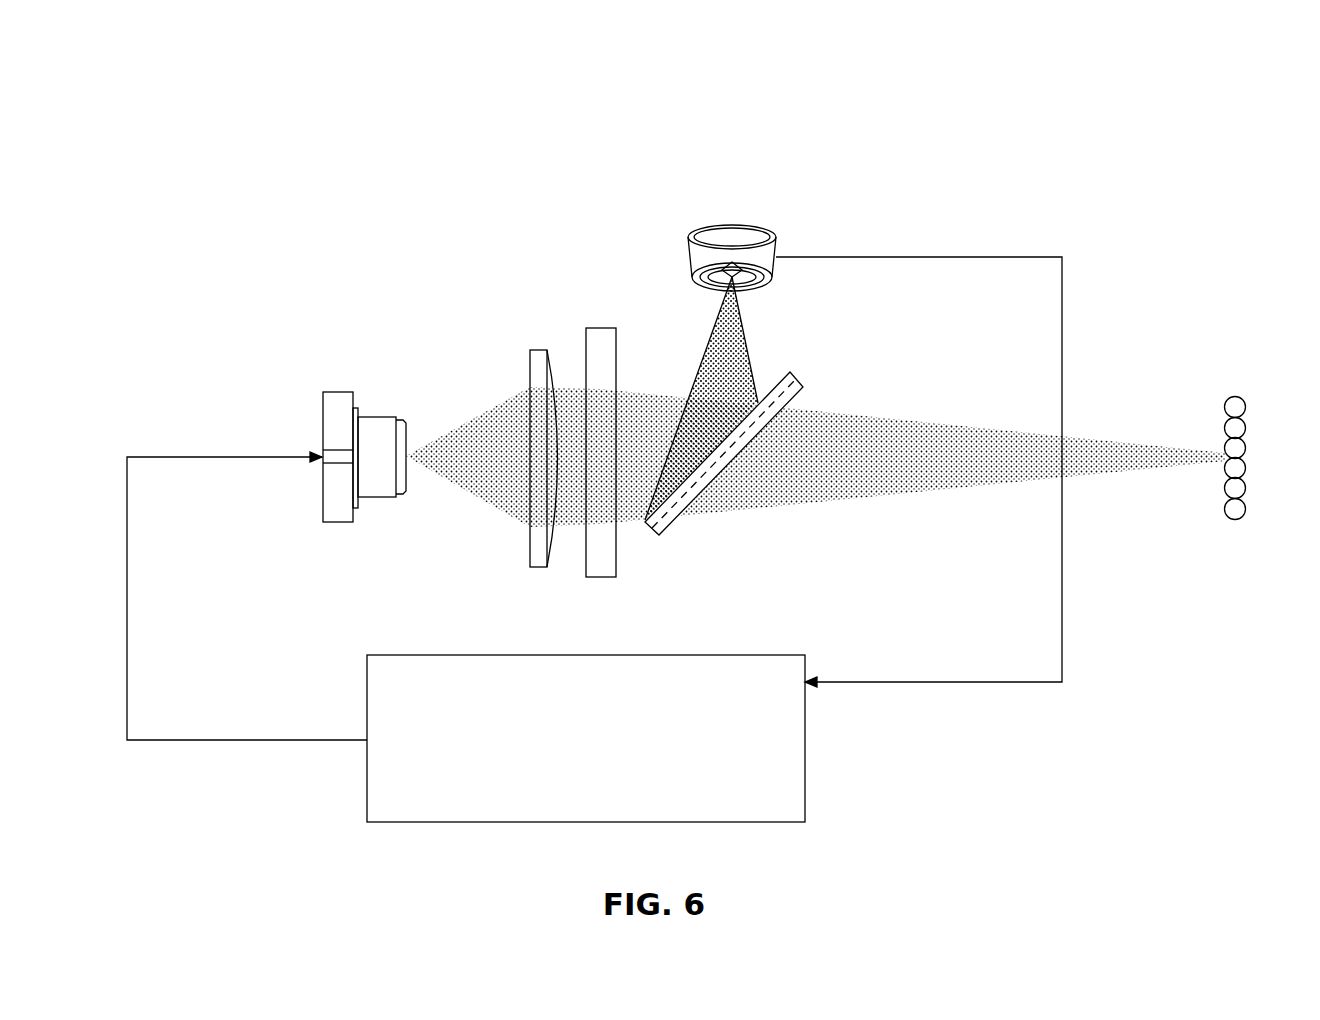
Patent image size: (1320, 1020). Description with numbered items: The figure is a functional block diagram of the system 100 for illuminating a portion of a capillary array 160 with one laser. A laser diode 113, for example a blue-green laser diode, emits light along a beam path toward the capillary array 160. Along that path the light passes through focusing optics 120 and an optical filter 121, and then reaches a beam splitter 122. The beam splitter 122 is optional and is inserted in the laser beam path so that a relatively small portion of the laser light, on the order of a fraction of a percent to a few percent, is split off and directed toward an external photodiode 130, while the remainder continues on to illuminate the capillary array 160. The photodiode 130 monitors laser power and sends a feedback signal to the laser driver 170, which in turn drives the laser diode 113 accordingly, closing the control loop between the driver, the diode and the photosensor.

The system 100 is at (978, 68).
The laser diode 113 is at (380, 422).
The focusing optics 120 is at (540, 350).
The optical filter 121 is at (600, 328).
The beam splitter 122 is at (783, 390).
The photodiode 130 is at (723, 243).
The capillary array 160 is at (1233, 398).
The laser driver 170 is at (602, 788).